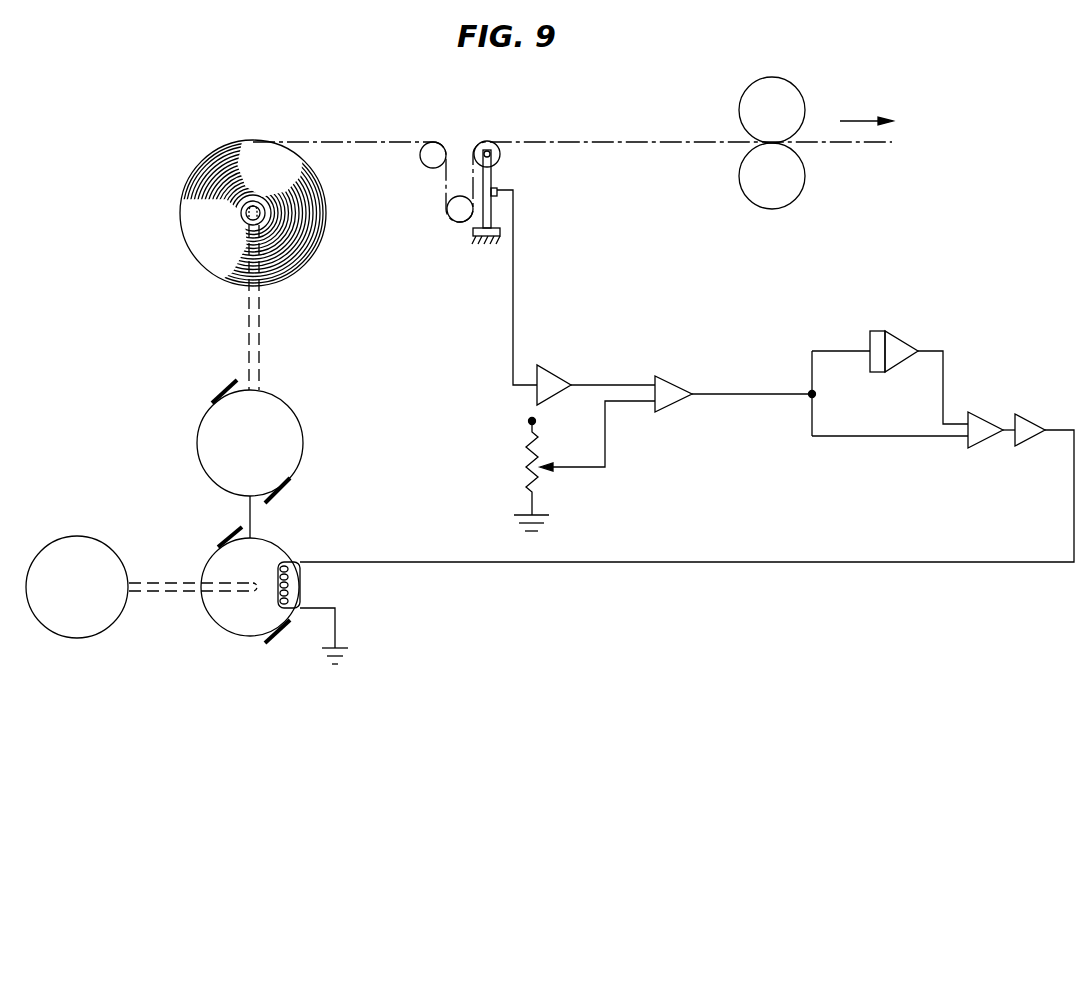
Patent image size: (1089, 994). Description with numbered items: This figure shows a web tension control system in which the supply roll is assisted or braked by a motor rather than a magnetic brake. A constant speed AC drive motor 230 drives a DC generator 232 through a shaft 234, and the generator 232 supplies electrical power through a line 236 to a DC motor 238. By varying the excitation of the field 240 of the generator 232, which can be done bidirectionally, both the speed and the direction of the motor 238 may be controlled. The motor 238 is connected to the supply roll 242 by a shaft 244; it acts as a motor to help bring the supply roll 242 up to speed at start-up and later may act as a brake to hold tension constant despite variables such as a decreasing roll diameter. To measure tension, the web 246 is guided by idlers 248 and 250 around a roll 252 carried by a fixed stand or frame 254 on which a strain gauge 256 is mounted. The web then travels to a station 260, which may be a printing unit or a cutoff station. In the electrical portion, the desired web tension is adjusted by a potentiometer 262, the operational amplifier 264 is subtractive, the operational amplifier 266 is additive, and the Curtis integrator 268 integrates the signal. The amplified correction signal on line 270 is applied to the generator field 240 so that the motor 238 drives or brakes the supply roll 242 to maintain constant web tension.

The constant speed AC drive motor 230 is at (104, 537).
The DC generator 232 is at (285, 548).
The shaft 234 is at (170, 596).
The line 236 is at (260, 522).
The DC motor 238 is at (304, 448).
The field 240 is at (305, 586).
The supply roll 242 is at (317, 250).
The shaft 244 is at (261, 338).
The web 246 is at (356, 135).
The idler 248 is at (425, 163).
The idler 250 is at (463, 223).
The roll 252 is at (500, 154).
The fixed stand or frame 254 is at (492, 180).
The strain gauge 256 is at (503, 210).
The station 260 is at (784, 86).
The potentiometer 262 is at (531, 455).
The operational amplifier 264 is at (671, 390).
The operational amplifier 266 is at (976, 415).
The Curtis integrator 268 is at (885, 341).
The line 270 is at (760, 562).